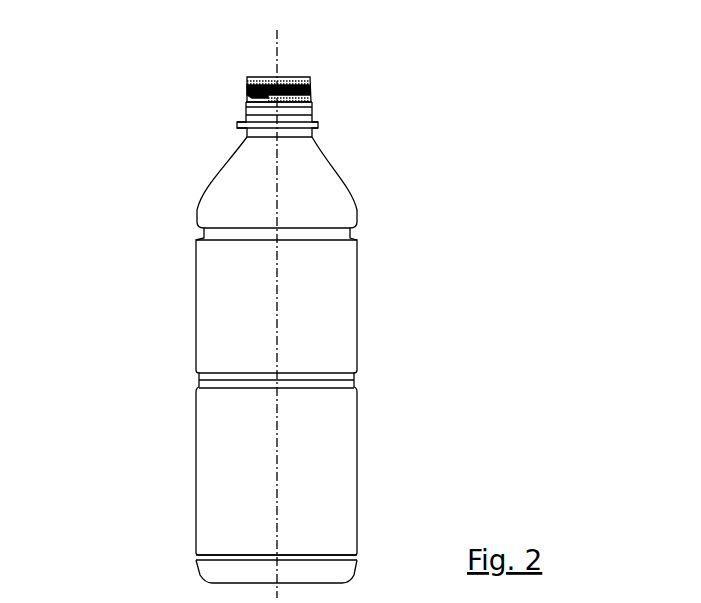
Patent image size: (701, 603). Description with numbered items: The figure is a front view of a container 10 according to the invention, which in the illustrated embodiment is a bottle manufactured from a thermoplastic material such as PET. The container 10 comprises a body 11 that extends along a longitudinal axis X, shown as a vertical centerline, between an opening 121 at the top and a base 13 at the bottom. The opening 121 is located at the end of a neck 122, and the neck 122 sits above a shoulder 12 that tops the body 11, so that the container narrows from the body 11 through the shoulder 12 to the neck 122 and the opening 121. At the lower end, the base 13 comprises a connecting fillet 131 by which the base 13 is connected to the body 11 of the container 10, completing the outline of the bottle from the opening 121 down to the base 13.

The container 10 is at (330, 299).
The body 11 is at (357, 340).
The shoulder 12 is at (228, 127).
The opening 121 is at (296, 76).
The neck 122 is at (313, 89).
The base 13 is at (263, 544).
The connecting fillet 131 is at (357, 567).
The longitudinal axis X is at (276, 300).